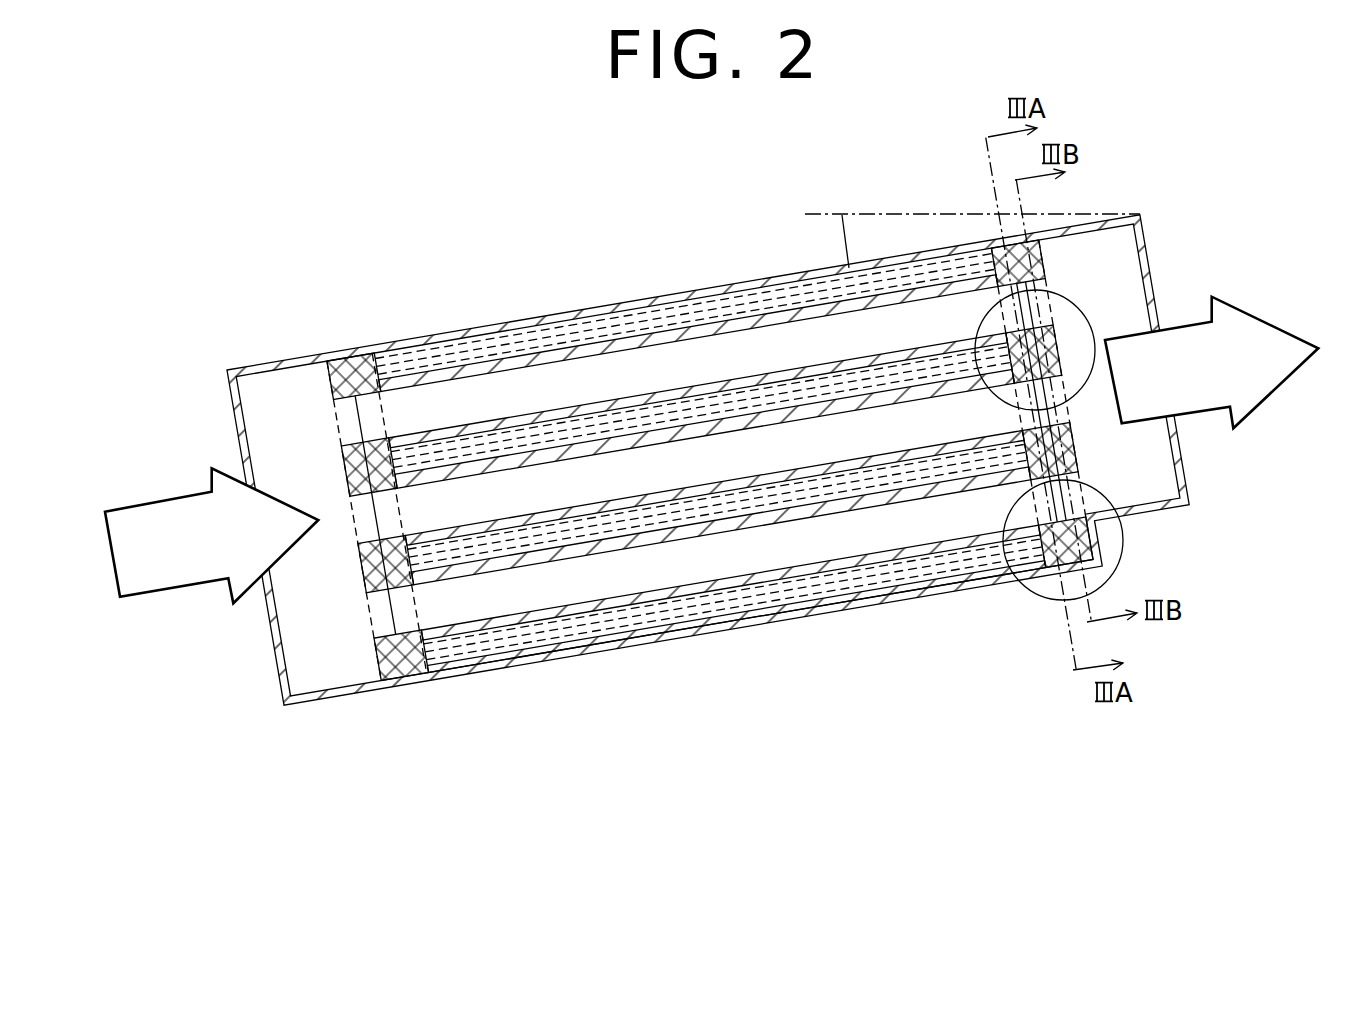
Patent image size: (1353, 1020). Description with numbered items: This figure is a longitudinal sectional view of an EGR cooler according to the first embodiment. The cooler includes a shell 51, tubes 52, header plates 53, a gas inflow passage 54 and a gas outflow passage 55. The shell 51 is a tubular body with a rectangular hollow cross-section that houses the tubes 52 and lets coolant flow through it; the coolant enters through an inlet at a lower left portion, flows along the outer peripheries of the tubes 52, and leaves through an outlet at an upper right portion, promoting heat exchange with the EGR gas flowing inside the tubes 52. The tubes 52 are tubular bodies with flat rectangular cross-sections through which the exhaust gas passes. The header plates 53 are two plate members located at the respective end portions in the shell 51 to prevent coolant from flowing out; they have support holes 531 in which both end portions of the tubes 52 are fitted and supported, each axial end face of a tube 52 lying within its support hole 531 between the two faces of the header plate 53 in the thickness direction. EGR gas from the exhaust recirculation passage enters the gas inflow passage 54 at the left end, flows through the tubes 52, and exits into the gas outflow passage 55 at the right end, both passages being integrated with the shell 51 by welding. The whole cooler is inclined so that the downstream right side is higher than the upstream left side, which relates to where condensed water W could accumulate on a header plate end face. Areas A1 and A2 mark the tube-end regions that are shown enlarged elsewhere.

The shell 51 is at (478, 676).
The tubes 52 is at (490, 366).
The header plates 53 is at (1033, 556).
The support holes 531 is at (1073, 500).
The gas inflow passage 54 is at (283, 708).
The gas outflow passage 55 is at (1142, 214).
The condensed water W is at (648, 618).
The area A1 is at (1090, 322).
The area A2 is at (1130, 543).